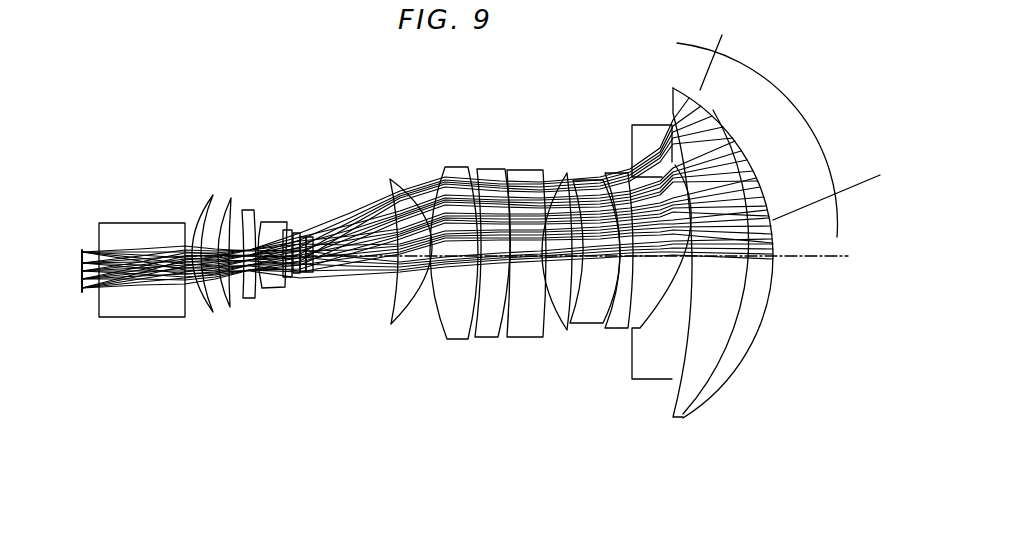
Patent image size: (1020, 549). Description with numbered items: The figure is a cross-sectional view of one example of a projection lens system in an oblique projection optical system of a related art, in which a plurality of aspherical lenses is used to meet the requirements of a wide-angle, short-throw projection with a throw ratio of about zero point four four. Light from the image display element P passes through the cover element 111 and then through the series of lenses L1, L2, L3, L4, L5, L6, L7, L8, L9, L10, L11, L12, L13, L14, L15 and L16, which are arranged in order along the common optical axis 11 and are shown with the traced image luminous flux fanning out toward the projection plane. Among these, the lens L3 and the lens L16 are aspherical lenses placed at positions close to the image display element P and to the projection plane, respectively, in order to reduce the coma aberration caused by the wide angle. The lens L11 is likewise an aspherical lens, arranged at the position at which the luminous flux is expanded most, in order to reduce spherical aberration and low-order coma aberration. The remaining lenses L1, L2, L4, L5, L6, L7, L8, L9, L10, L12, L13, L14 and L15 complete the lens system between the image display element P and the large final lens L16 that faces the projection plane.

The image display element P is at (82, 293).
The cover glass / filter 111 is at (142, 313).
The lens L1 is at (198, 298).
The lens L2 is at (217, 310).
The aspherical lens L3 is at (250, 300).
The lens L4 is at (273, 290).
The lens L5 is at (286, 278).
The lens L6 is at (295, 274).
The lens L7 is at (304, 273).
The lens L8 is at (312, 268).
The lens L9 is at (418, 287).
The lens L10 is at (460, 310).
The aspherical lens L11 is at (507, 287).
The lens L12 is at (567, 320).
The lens L13 is at (590, 310).
The lens L14 is at (622, 313).
The lens L15 is at (652, 340).
The aspherical lens L16 is at (722, 357).
The optical axis 11 is at (795, 266).